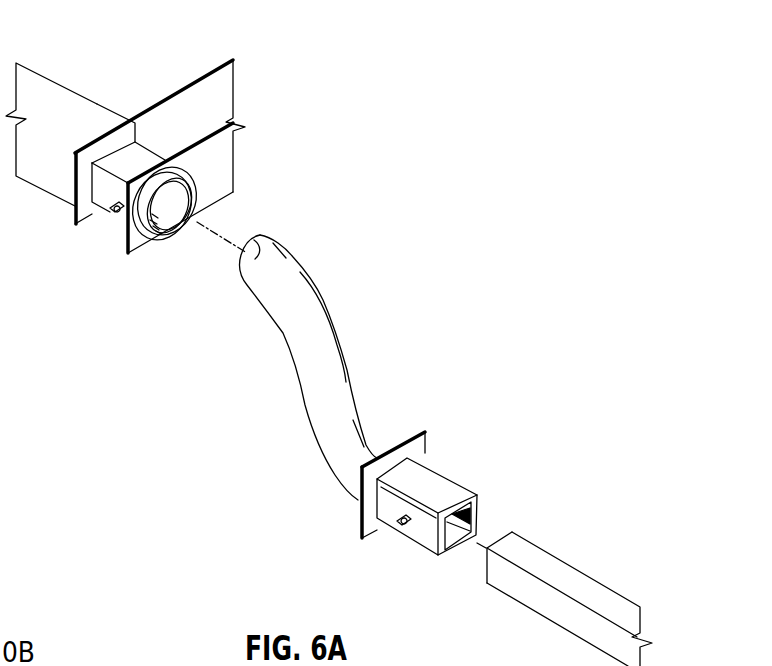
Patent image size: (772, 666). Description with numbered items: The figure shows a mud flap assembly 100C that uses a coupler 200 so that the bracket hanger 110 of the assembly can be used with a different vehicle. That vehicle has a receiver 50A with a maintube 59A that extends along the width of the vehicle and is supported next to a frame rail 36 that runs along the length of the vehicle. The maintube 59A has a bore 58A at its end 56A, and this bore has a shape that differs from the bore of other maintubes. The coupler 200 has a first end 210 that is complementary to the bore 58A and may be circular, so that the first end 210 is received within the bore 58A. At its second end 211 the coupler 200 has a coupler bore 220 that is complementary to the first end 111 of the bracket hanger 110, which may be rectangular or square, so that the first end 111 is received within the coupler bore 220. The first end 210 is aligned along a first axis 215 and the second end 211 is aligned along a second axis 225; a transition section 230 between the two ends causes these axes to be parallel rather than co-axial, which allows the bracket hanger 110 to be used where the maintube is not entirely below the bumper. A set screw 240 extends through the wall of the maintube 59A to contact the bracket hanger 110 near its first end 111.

The receiver 50A is at (38, 95).
The maintube 59A is at (97, 125).
The frame rail 36 is at (200, 95).
The end of maintube 56A is at (157, 242).
The bore 58A is at (187, 229).
The first axis 215 is at (230, 237).
The first end of coupler 210 is at (258, 237).
The transition section 230 is at (300, 362).
The coupler 200 is at (403, 470).
The second end of coupler 211 is at (463, 490).
The coupler bore 220 is at (473, 518).
The set screw 240 is at (400, 523).
The second axis 225 is at (477, 540).
The first end of bracket hanger 111 is at (517, 540).
The bracket hanger 110 is at (588, 592).
The mud flap assembly 100C is at (347, 338).